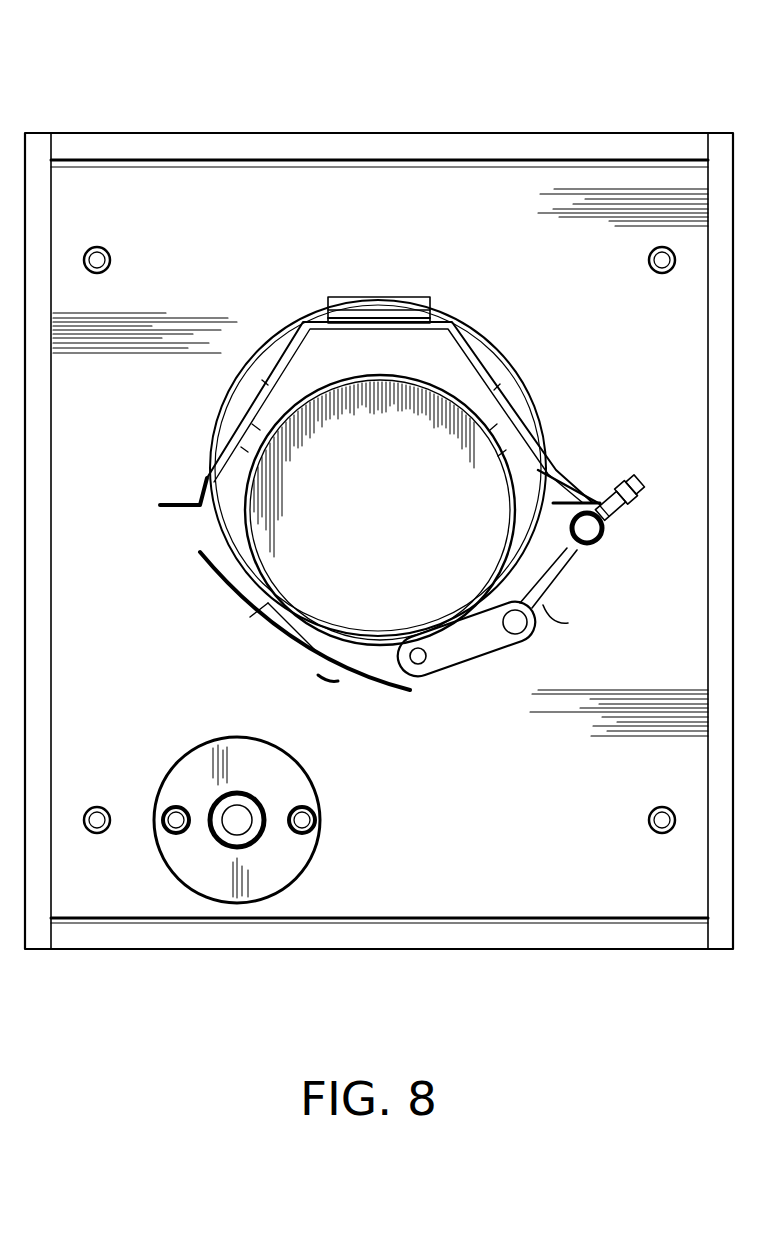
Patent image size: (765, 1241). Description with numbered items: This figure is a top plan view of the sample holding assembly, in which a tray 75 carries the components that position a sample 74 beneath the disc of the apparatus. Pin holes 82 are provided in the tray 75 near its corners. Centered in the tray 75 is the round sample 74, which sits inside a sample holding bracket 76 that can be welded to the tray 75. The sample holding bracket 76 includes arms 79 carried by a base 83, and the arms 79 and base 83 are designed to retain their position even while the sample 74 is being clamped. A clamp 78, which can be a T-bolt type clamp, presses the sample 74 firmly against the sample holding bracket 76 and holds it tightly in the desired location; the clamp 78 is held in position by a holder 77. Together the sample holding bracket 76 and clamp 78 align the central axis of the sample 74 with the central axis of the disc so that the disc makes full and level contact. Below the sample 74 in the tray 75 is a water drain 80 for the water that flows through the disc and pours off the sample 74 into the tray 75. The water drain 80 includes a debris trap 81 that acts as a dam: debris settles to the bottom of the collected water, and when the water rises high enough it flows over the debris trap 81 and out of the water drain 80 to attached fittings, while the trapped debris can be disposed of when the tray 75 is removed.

The sample 74 is at (423, 380).
The tray 75 is at (213, 131).
The sample holding bracket 76 is at (496, 296).
The holder 77 is at (372, 297).
The clamp 78 is at (495, 643).
The arms 79 is at (266, 384).
The water drain 80 is at (232, 828).
The debris trap 81 is at (277, 882).
The pin holes 82 is at (93, 246).
The base 83 is at (315, 312).